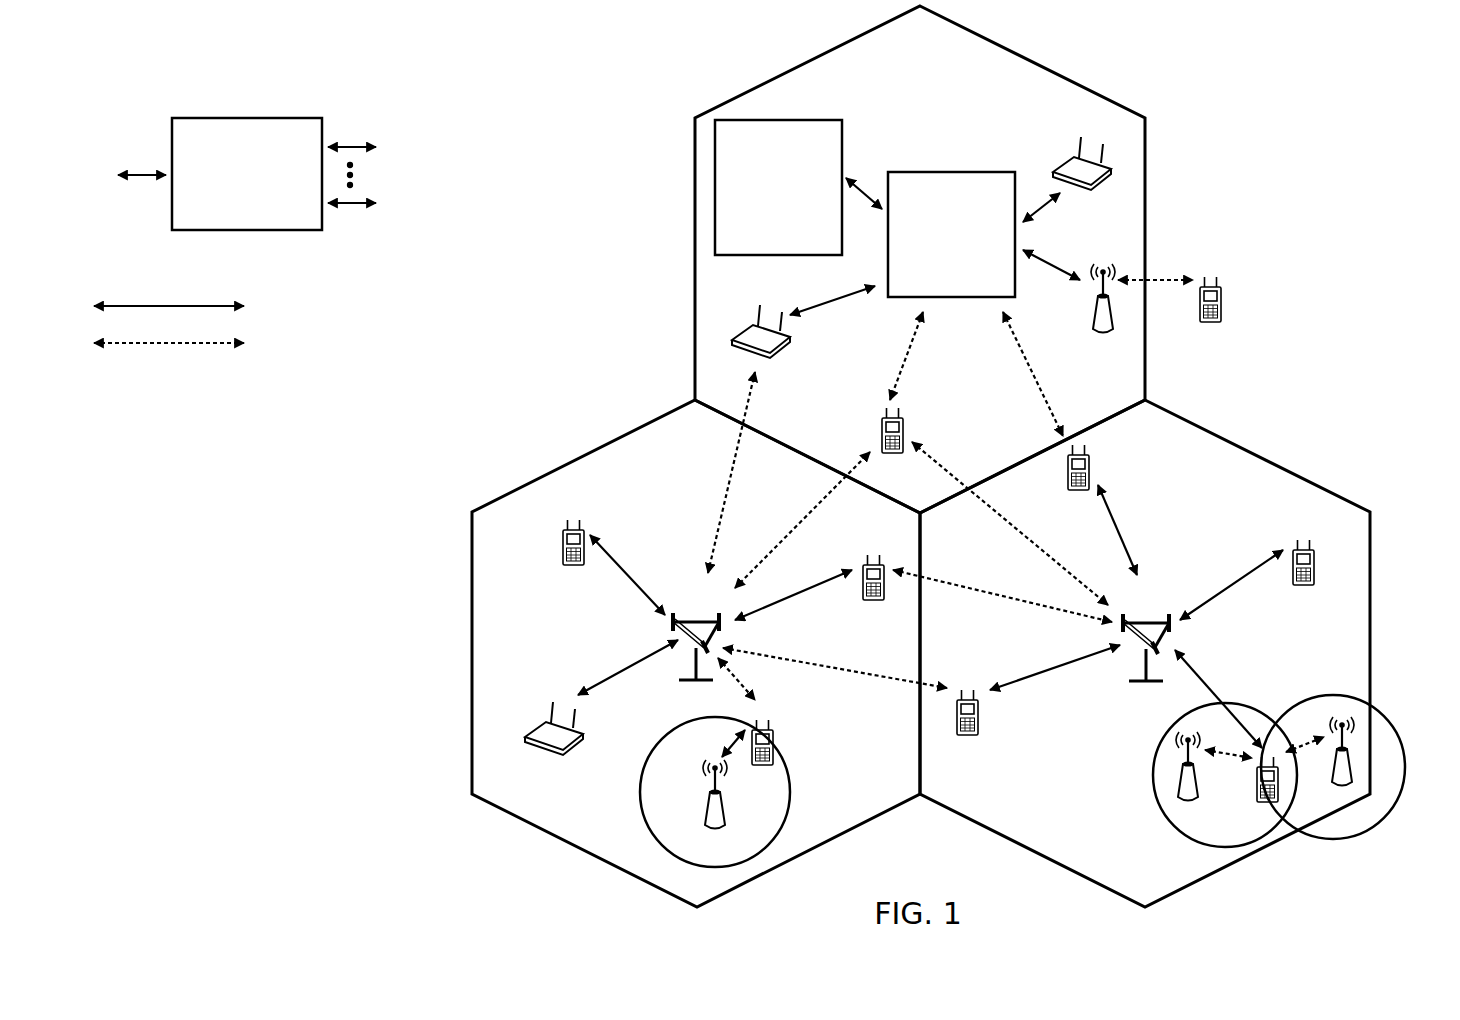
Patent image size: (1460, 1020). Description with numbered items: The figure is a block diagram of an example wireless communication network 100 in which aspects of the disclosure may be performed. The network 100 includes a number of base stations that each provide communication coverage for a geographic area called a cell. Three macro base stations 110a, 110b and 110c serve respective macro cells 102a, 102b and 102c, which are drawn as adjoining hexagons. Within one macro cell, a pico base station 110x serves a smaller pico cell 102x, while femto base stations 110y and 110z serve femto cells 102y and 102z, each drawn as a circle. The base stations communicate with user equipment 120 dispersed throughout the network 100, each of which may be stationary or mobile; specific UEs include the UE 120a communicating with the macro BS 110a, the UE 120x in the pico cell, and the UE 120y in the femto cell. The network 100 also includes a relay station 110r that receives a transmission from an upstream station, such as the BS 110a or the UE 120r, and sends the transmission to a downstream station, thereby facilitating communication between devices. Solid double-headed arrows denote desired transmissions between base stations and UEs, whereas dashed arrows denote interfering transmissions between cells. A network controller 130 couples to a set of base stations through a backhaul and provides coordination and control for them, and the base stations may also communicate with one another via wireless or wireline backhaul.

The wireless communication network 100 is at (1298, 76).
The macro cell 102a is at (1034, 62).
The macro cell 102b is at (586, 456).
The macro cell 102c is at (1262, 456).
The pico cell 102x is at (665, 738).
The femto cell 102y is at (1156, 746).
The femto cell 102z is at (1318, 695).
The macro base station 110a is at (985, 171).
The macro base station 110b is at (690, 618).
The macro base station 110c is at (1142, 618).
The relay station 110r is at (1092, 313).
The pico base station 110x is at (724, 823).
The femto base station 110y is at (1196, 797).
The femto base station 110z is at (1348, 781).
The user equipment 120 is at (1080, 152).
The user equipment 120a is at (827, 119).
The user equipment 120r is at (1222, 319).
The user equipment 120x is at (774, 736).
The user equipment 120y is at (1256, 797).
The network controller 130 is at (246, 118).